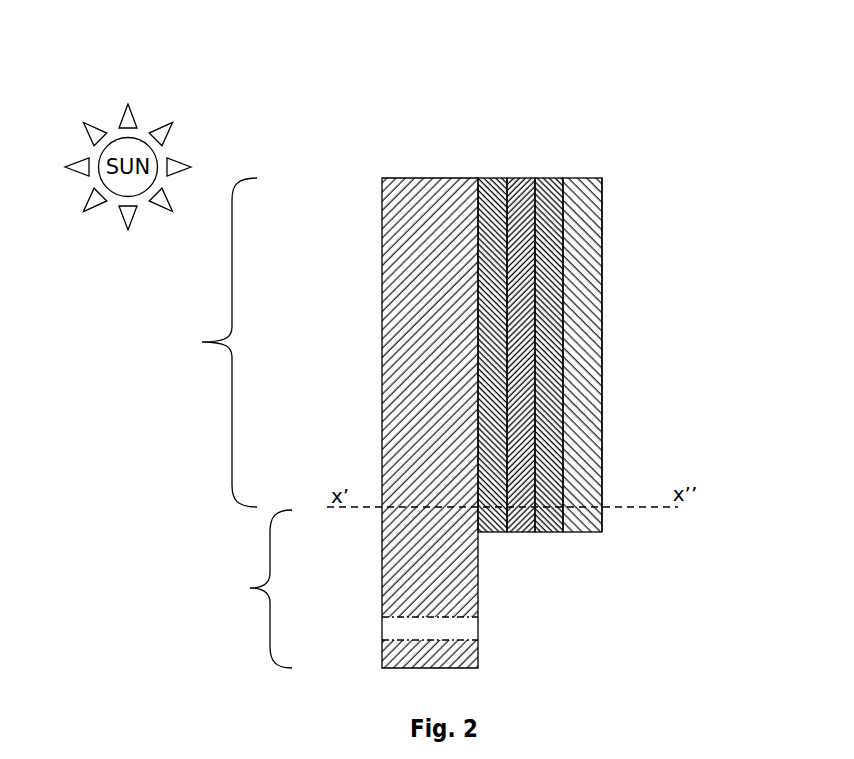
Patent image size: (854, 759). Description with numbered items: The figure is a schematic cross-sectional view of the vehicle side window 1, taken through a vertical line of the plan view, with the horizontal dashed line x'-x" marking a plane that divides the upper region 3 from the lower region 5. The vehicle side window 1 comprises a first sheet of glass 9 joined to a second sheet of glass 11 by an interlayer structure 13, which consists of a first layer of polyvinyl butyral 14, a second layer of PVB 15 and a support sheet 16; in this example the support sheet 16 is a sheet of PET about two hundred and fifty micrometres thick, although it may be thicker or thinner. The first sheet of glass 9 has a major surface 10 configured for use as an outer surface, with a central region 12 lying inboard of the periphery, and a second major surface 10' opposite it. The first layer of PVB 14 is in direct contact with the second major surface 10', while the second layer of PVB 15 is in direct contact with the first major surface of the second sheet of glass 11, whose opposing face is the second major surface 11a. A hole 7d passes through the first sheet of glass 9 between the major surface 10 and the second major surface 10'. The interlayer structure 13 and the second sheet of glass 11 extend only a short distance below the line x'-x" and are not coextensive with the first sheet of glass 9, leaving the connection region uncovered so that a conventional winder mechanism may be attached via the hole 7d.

The vehicle side window 1 is at (498, 383).
The upper region 3 is at (220, 342).
The lower region 5 is at (256, 589).
The hole 7d is at (372, 631).
The first sheet of glass 9 is at (443, 195).
The major surface 10 is at (378, 399).
The second major surface 10' is at (501, 593).
The second sheet of glass 11 is at (583, 200).
The second opposing major surface 11a is at (604, 302).
The central region 12 is at (356, 338).
The interlayer structure 13 is at (541, 325).
The first layer of polyvinyl butyral 14 is at (493, 195).
The second layer of PVB 15 is at (552, 200).
The support sheet 16 is at (520, 195).